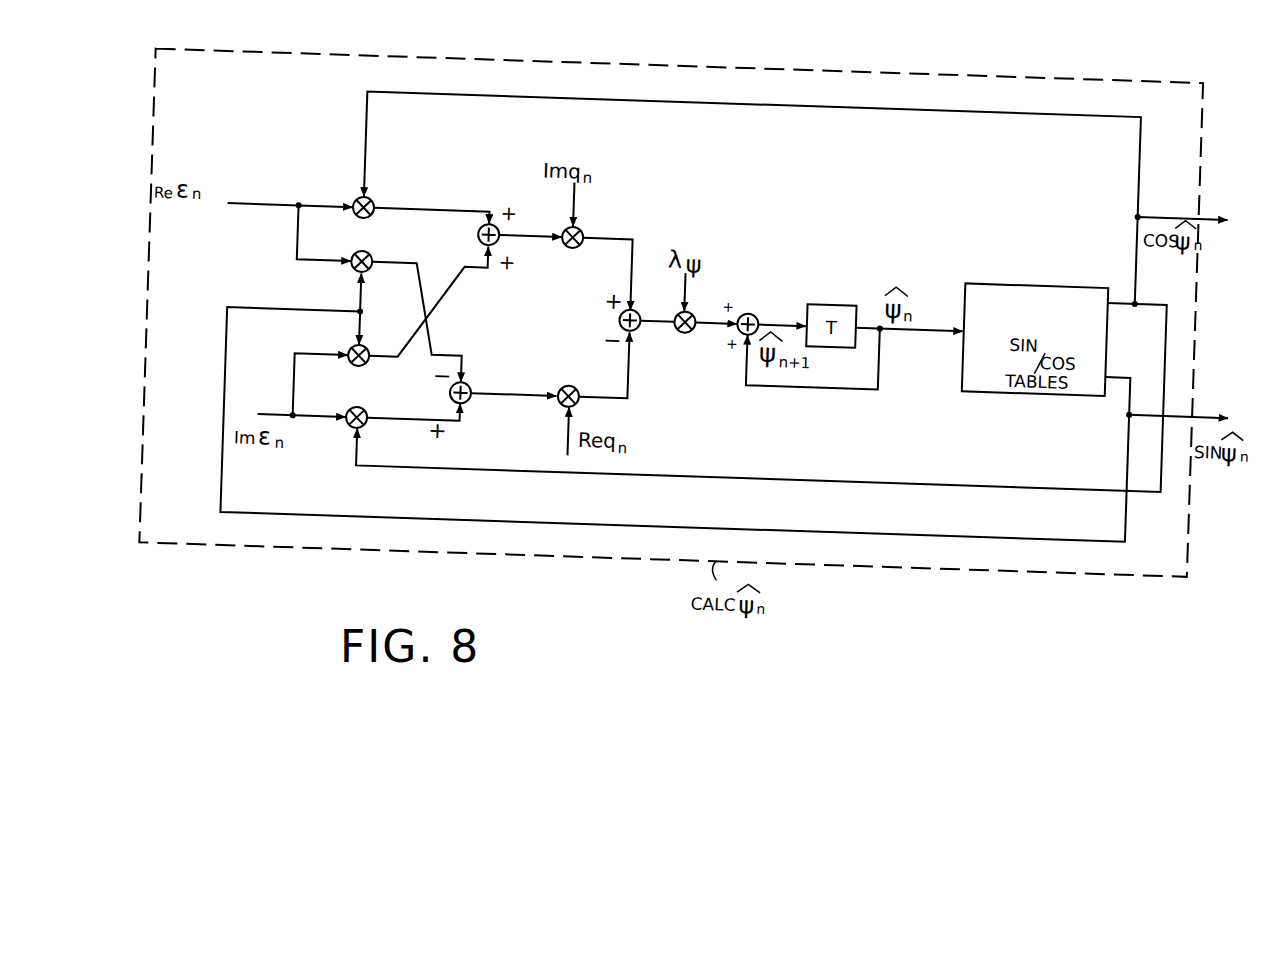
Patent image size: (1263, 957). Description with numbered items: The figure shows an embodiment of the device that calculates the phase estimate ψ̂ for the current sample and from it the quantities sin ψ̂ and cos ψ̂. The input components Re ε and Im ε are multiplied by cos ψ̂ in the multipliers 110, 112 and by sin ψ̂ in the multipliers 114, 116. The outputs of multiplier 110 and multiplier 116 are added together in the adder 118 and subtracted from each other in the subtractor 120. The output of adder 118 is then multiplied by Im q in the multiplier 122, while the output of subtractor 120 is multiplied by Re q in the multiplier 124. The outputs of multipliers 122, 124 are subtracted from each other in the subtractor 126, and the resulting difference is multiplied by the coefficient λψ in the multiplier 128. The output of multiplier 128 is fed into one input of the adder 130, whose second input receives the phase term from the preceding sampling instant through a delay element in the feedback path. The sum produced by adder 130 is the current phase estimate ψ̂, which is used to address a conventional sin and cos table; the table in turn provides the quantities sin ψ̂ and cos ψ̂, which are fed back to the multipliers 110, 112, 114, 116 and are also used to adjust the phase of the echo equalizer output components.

The multiplier 110 is at (368, 210).
The multiplier 112 is at (372, 431).
The multiplier 114 is at (368, 265).
The multiplier 116 is at (369, 372).
The adder 118 is at (478, 247).
The subtractor 120 is at (474, 403).
The multiplier 122 is at (578, 249).
The multiplier 124 is at (564, 393).
The subtractor 126 is at (637, 331).
The multiplier 128 is at (692, 330).
The adder 130 is at (752, 311).